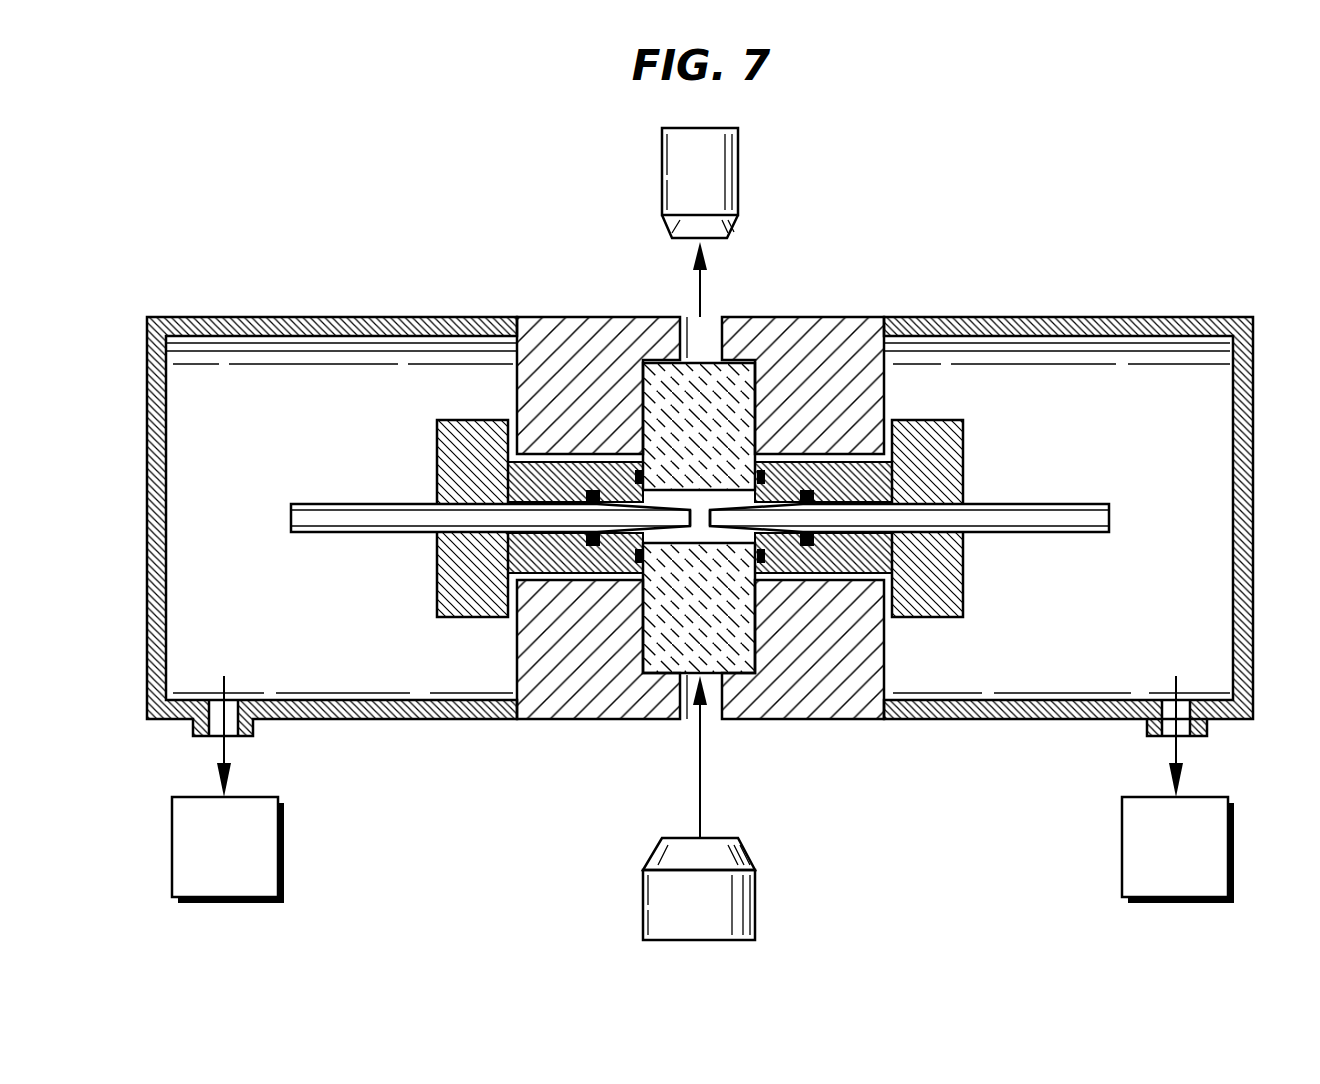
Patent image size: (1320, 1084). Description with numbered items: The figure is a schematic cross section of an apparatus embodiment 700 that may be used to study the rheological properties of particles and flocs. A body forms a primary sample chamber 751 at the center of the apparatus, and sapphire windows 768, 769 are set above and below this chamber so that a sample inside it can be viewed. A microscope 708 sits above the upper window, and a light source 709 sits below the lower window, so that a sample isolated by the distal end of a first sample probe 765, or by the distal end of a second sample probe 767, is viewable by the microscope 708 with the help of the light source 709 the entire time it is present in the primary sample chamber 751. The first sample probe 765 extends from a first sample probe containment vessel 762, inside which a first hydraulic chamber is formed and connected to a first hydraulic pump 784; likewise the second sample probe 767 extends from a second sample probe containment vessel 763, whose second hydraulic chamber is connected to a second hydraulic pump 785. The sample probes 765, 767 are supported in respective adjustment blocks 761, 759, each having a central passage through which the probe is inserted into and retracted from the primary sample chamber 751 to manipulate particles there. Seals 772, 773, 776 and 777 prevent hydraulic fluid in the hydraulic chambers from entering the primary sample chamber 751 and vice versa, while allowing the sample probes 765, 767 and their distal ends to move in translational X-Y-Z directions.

The apparatus embodiment 700 is at (1146, 257).
The microscope 708 is at (662, 165).
The light source 709 is at (755, 898).
The primary sample chamber 751 is at (722, 540).
The adjustment block 759 is at (466, 420).
The adjustment block 761 is at (937, 420).
The first sample probe containment vessel 762 is at (1200, 317).
The second sample probe containment vessel 763 is at (201, 317).
The first sample probe 765 is at (1036, 504).
The second sample probe 767 is at (364, 504).
The sapphire window 768 is at (730, 437).
The sapphire window 769 is at (730, 628).
The seal 772 is at (765, 557).
The seal 773 is at (635, 557).
The seal 776 is at (807, 490).
The seal 777 is at (593, 490).
The first hydraulic pump 784 is at (1207, 863).
The second hydraulic pump 785 is at (257, 863).